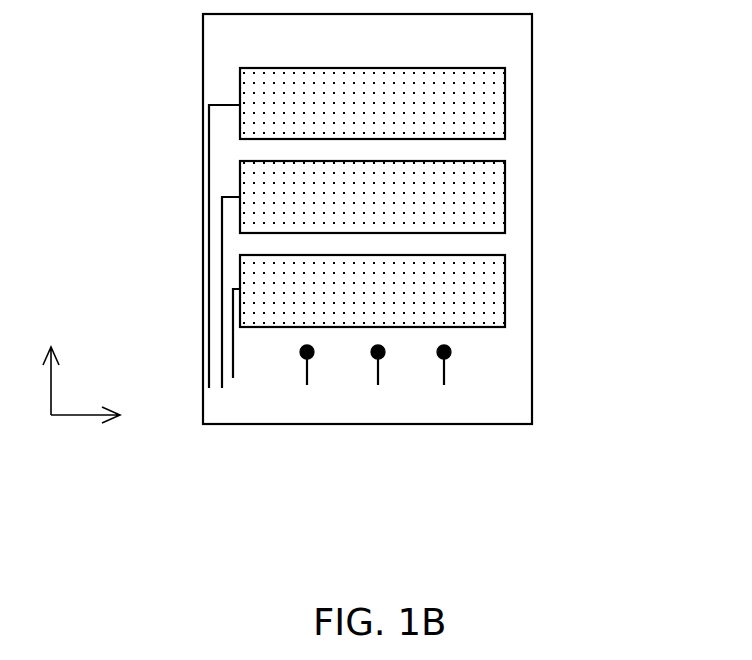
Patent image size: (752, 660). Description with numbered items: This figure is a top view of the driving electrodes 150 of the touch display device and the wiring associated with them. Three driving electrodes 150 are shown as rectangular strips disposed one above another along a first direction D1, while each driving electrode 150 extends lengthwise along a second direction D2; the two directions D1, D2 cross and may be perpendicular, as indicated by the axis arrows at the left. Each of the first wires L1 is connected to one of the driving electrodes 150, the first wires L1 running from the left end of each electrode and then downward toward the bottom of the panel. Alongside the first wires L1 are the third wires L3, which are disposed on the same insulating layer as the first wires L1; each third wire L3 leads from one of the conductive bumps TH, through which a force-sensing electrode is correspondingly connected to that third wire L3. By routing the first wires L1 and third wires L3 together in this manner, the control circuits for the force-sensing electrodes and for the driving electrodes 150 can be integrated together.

The driving electrodes 150 is at (495, 106).
The first wires L1 is at (233, 378).
The third wires L3 is at (307, 375).
The conductive bumps TH is at (451, 352).
The first direction D1 is at (51, 358).
The second direction D2 is at (104, 415).